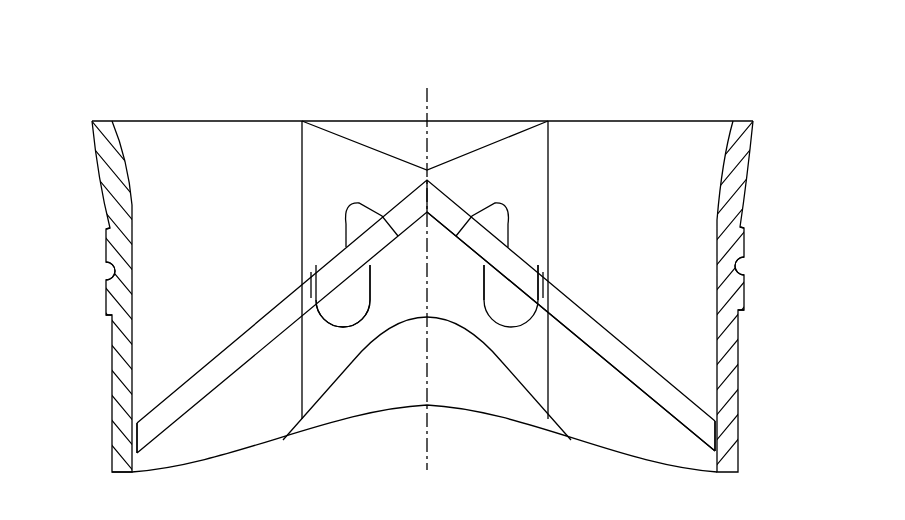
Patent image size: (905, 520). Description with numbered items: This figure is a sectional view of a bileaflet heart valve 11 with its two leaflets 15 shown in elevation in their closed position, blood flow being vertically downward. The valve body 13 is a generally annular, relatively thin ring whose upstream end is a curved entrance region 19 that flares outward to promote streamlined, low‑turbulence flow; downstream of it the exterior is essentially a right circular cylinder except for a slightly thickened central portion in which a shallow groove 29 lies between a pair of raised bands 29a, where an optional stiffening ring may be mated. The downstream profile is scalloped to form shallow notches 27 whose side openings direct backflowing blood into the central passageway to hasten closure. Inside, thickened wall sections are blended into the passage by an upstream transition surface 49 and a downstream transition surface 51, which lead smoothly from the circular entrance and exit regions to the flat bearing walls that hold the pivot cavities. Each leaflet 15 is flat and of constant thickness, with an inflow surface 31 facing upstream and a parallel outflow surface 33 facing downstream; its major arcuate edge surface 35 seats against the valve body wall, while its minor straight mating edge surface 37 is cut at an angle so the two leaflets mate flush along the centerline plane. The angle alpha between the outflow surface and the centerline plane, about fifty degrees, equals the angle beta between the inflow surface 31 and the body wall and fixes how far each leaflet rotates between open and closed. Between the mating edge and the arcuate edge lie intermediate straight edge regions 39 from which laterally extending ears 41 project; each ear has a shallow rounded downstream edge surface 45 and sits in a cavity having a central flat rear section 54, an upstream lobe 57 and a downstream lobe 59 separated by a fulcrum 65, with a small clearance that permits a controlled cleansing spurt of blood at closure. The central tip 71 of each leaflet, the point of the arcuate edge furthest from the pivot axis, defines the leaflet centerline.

The heart valve 11 is at (588, 76).
The valve body 13 is at (105, 183).
The leaflets 15 is at (610, 348).
The curved entrance region 19 is at (128, 144).
The shallow notches 27 is at (432, 405).
The shallow groove 29 is at (740, 266).
The raised bands 29a is at (745, 243).
The inflow surface 31 is at (650, 367).
The outflow surface 33 is at (648, 400).
The major arcuate edge surface 35 is at (134, 443).
The minor straight mating edge surface 37 is at (445, 192).
The intermediate straight edge regions 39 is at (430, 199).
The ears 41 is at (343, 255).
The downstream edge surface 45 is at (525, 260).
The upstream transition surface 49 is at (373, 132).
The downstream transition surface 51 is at (427, 378).
The central flat rear section 54 is at (362, 292).
The upstream lobes 57 is at (497, 216).
The downstream lobes 59 is at (342, 312).
The fulcrums 65 is at (480, 252).
The central tip 71 is at (135, 418).